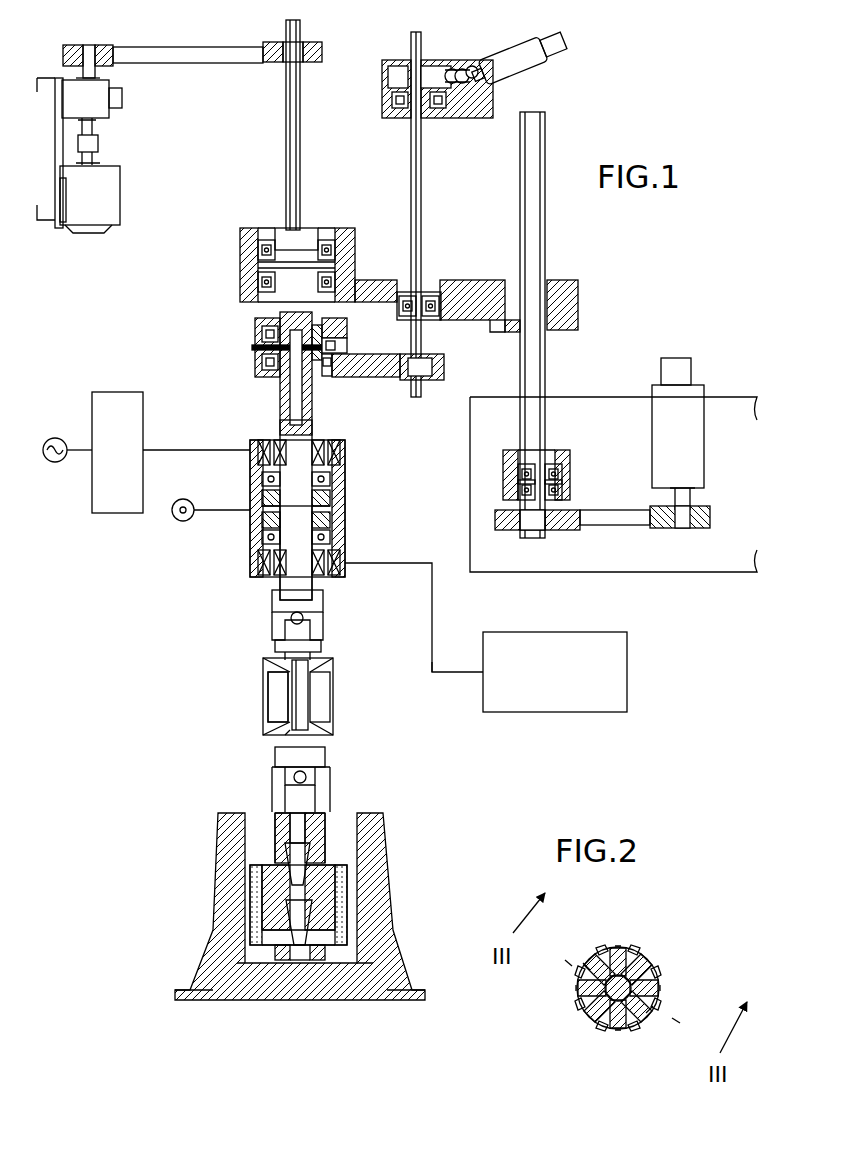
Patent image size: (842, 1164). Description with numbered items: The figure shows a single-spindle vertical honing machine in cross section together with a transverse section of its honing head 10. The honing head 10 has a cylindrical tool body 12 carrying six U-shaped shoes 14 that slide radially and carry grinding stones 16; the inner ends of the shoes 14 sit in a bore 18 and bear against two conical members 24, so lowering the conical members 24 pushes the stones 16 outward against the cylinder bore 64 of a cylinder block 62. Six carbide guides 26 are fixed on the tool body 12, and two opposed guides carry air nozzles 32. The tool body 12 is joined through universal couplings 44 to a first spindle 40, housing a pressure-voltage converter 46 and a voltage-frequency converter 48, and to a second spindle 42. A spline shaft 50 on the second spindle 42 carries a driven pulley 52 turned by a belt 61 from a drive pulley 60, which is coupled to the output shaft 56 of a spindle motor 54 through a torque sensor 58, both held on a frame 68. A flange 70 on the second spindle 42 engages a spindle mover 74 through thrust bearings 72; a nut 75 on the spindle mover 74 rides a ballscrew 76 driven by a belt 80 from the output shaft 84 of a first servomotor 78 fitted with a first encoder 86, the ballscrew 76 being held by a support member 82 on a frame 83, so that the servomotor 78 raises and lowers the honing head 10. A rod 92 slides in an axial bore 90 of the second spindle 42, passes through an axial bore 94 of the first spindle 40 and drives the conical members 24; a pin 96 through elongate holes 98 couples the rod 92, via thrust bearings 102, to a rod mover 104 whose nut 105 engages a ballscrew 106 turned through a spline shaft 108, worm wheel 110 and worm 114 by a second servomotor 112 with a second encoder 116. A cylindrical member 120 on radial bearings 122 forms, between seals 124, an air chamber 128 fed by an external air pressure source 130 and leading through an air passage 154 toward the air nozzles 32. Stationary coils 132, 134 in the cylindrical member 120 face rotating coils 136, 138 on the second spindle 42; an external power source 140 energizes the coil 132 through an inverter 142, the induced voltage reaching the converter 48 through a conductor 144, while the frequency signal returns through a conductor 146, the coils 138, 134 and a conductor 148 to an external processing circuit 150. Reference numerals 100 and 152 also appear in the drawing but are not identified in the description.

In FIG. 1, the honing head 10 is at (340, 965).
In FIG. 2, the honing head 10 is at (612, 1062).
In FIG. 1, the tool body 12 is at (315, 794).
In FIG. 2, the tool body 12 is at (640, 965).
In FIG. 1, the shoes 14 is at (270, 878).
In FIG. 2, the shoes 14 is at (608, 955).
In FIG. 1, the grinding stones 16 is at (256, 912).
In FIG. 2, the grinding stones 16 is at (598, 950).
In FIG. 1, the bore 18 is at (295, 960).
In FIG. 1, the conical members 24 is at (310, 860).
In FIG. 2, the conical members 24 is at (625, 1032).
In FIG. 2, the guides 26 is at (618, 945).
In FIG. 2, the air nozzles 32 is at (590, 968).
In FIG. 1, the first spindle 40 is at (263, 672).
In FIG. 1, the second spindle 42 is at (280, 420).
In FIG. 1, the universal couplings 44 is at (258, 642).
In FIG. 1, the pressure-voltage converter 46 is at (270, 712).
In FIG. 1, the voltage-frequency converter 48 is at (322, 697).
In FIG. 1, the spline shaft 50 is at (286, 157).
In FIG. 1, the driven pulley 52 is at (270, 42).
In FIG. 1, the spindle motor 54 is at (115, 204).
In FIG. 1, the output shaft 56 is at (96, 156).
In FIG. 1, the torque sensor 58 is at (96, 108).
In FIG. 1, the drive pulley 60 is at (97, 45).
In FIG. 1, the belt 61 is at (196, 62).
In FIG. 1, the cylinder block 62 is at (410, 975).
In FIG. 1, the cylinder bore 64 is at (358, 815).
In FIG. 1, the frame 68 is at (48, 222).
In FIG. 1, the flange 70 is at (258, 266).
In FIG. 1, the thrust bearings 72 is at (240, 250).
In FIG. 1, the spindle mover 74 is at (468, 280).
In FIG. 1, the nut 75 is at (550, 280).
In FIG. 1, the ballscrew 76 is at (530, 365).
In FIG. 1, the first servomotor 78 is at (658, 425).
In FIG. 1, the belt 80 is at (615, 525).
In FIG. 1, the support member 82 is at (555, 468).
In FIG. 1, the frame 83 is at (563, 572).
In FIG. 1, the output shaft 84 is at (680, 528).
In FIG. 1, the first encoder 86 is at (690, 366).
In FIG. 1, the axial bore 90 is at (280, 396).
In FIG. 1, the rod 92 is at (290, 380).
In FIG. 1, the axial bore 94 is at (290, 728).
In FIG. 1, the pin 96 is at (258, 340).
In FIG. 1, the elongate holes 98 is at (316, 362).
In FIG. 1, the plate 100 is at (258, 355).
In FIG. 1, the thrust bearings 102 is at (330, 330).
In FIG. 1, the rod mover 104 is at (375, 378).
In FIG. 1, the nut 105 is at (436, 318).
In FIG. 1, the ballscrew 106 is at (425, 380).
In FIG. 1, the spline shaft 108 is at (411, 44).
In FIG. 1, the worm wheel 110 is at (398, 80).
In FIG. 1, the second servomotor 112 is at (516, 46).
In FIG. 1, the worm 114 is at (460, 64).
In FIG. 1, the second encoder 116 is at (578, 40).
In FIG. 1, the cylindrical member 120 is at (250, 494).
In FIG. 1, the radial bearings 122 is at (332, 478).
In FIG. 1, the seals 124 is at (332, 496).
In FIG. 1, the air chamber 128 is at (318, 506).
In FIG. 1, the external air pressure source 130 is at (183, 521).
In FIG. 1, the stationary coil 132 is at (252, 450).
In FIG. 1, the stationary coil 134 is at (258, 560).
In FIG. 1, the rotating coil 136 is at (272, 438).
In FIG. 1, the rotating coil 138 is at (280, 580).
In FIG. 1, the external power source 140 is at (55, 462).
In FIG. 1, the inverter 142 is at (118, 392).
In FIG. 1, the conductor 144 is at (318, 440).
In FIG. 1, the conductor 146 is at (325, 620).
In FIG. 1, the conductor 148 is at (372, 563).
In FIG. 1, the external processing circuit 150 is at (488, 632).
In FIG. 1, the signal path 152 is at (365, 662).
In FIG. 1, the air passage 154 is at (275, 615).